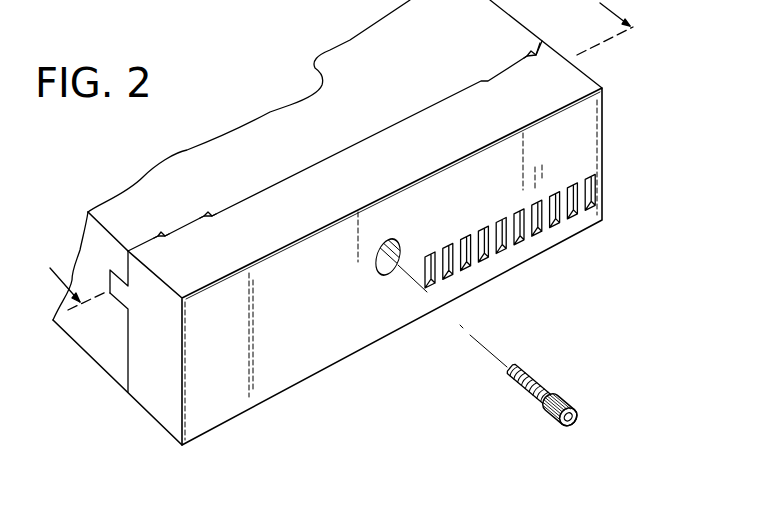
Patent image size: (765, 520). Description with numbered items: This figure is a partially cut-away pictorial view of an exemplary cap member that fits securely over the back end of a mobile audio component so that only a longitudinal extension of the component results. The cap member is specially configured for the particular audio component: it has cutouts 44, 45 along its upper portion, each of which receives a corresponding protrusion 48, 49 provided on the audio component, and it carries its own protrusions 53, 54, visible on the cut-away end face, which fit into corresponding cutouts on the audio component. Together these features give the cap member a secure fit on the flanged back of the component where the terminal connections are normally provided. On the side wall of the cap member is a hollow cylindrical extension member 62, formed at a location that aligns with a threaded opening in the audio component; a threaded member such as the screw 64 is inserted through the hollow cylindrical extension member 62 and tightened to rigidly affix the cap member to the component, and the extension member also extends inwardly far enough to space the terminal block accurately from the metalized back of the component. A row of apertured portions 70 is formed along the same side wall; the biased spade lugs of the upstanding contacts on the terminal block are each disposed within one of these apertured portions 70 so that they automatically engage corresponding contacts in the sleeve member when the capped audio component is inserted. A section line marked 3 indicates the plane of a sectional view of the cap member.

The section line 3- 3 is at (348, 165).
The cutout 44 is at (494, 86).
The cutout 45 is at (185, 235).
The protrusion 48 is at (506, 62).
The protrusion 49 is at (181, 232).
The protrusion 53 is at (121, 312).
The protrusion 54 is at (111, 268).
The hollow cylindrical extension member 62 is at (383, 272).
The screw 64 is at (547, 390).
The apertured portion 70 is at (497, 256).